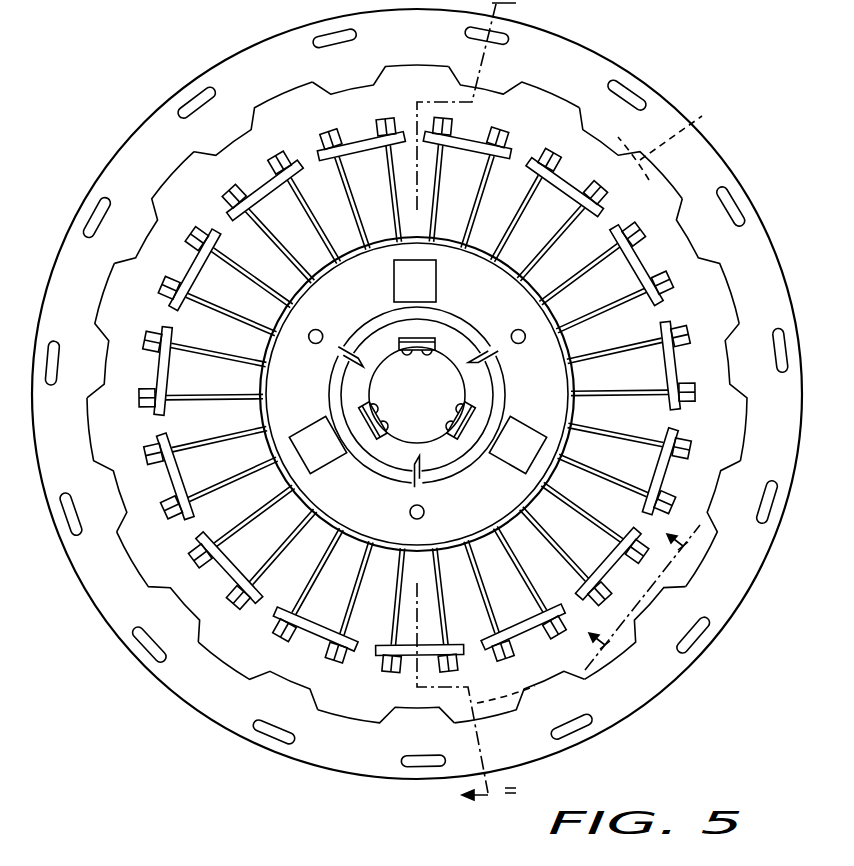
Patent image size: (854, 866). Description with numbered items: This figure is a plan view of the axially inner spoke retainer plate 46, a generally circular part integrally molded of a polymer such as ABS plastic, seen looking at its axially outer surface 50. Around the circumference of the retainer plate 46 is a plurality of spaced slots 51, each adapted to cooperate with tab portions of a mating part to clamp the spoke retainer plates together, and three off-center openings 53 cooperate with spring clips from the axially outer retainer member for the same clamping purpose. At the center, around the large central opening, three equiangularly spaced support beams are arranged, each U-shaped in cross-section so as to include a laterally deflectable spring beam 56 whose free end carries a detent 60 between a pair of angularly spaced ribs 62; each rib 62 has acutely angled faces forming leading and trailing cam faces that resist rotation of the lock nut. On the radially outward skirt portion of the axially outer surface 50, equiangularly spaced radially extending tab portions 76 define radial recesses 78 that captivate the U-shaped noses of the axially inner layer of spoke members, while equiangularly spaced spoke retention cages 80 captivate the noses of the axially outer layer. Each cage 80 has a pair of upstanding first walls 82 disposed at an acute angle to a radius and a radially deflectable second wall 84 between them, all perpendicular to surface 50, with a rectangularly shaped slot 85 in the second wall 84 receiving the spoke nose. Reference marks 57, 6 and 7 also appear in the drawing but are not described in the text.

The axially inner spoke retainer plate 46 is at (417, 394).
The axially outer surface 50 is at (580, 56).
The spaced slots 51 is at (467, 32).
The off-center openings 53 is at (394, 275).
The spring beam 56 is at (433, 340).
The hub ring 57 is at (428, 389).
The detent 60 is at (384, 412).
The ribs 62 is at (431, 351).
The tab portions 76 is at (657, 184).
The radial recesses 78 is at (598, 399).
The spoke retention cages 80 is at (657, 466).
The first walls 82 is at (608, 589).
The second wall 84 is at (630, 530).
The rectangularly shaped slot 85 is at (591, 578).
The section line 6- 6 is at (635, 596).
The section line 7- 7 is at (476, 408).